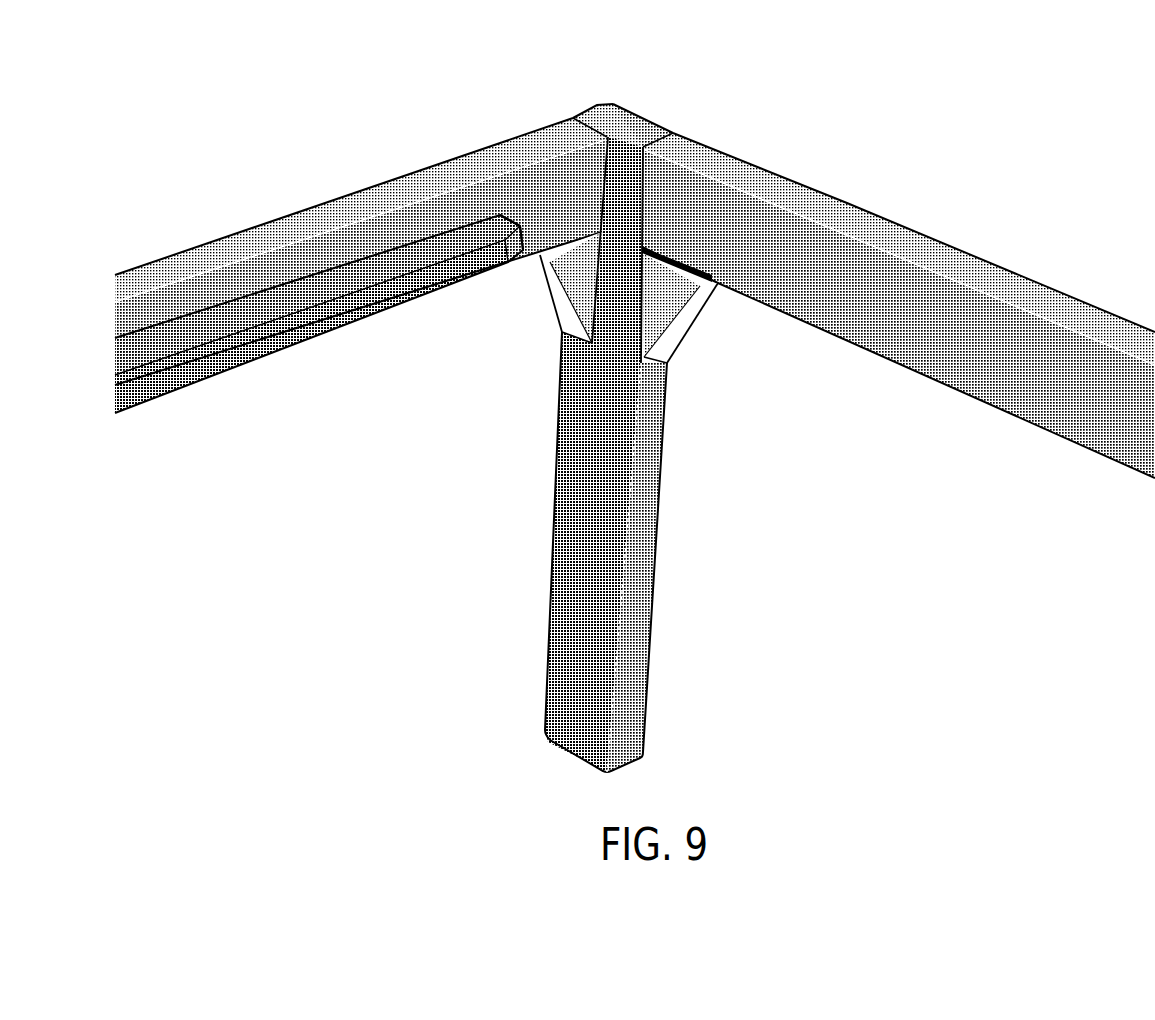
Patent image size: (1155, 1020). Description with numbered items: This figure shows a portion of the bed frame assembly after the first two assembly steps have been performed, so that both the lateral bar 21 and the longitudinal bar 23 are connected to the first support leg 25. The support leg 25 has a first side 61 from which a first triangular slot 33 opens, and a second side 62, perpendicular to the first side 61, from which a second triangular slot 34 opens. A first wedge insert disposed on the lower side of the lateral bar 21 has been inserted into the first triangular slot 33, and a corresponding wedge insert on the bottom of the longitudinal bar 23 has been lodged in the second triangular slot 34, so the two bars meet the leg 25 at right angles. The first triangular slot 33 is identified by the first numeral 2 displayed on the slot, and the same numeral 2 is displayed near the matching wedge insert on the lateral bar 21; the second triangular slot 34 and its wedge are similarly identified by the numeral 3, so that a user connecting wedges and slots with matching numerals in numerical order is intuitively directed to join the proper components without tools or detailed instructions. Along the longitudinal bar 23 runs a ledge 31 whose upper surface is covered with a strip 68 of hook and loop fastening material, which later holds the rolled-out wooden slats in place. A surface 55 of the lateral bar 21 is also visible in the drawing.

The lateral bar 21 is at (845, 203).
The longitudinal bar 23 is at (362, 193).
The first support leg 25 is at (618, 405).
The first triangular slot 33 is at (697, 319).
The second triangular slot 34 is at (541, 292).
The strip of hook and loop fastening material 68 is at (319, 314).
The ledge 31 is at (504, 221).
The lateral bar surface 55 is at (900, 242).
The first side 61 is at (642, 500).
The second side 62 is at (600, 500).
The first numeral 2 is at (661, 255).
The second slot face marker 3 is at (571, 245).